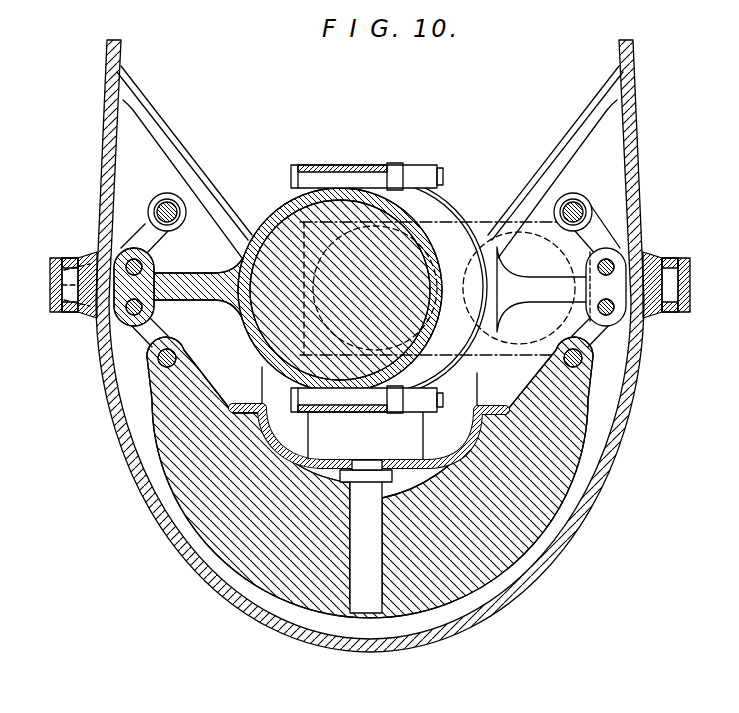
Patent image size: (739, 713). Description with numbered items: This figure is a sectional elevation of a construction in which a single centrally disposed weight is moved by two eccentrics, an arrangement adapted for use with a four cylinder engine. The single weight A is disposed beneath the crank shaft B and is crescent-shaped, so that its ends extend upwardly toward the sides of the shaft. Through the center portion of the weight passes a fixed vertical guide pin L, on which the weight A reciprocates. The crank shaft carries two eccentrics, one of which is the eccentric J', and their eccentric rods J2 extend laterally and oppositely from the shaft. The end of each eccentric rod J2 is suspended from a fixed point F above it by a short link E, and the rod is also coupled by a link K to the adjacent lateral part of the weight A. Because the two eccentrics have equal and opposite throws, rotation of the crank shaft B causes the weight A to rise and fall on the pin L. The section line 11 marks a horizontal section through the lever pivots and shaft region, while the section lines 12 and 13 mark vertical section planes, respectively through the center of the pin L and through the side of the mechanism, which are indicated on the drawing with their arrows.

The weight A is at (507, 527).
The crank shaft B is at (377, 243).
The short link E is at (590, 242).
The fixed point F is at (567, 213).
The eccentric J' is at (340, 266).
The eccentric rod J2 is at (540, 280).
The link K is at (590, 333).
The fixed vertical guide pin L is at (353, 572).
The section line 11- 11 is at (722, 287).
The section line 12- 12 is at (360, 700).
The section line 13- 13 is at (172, 88).